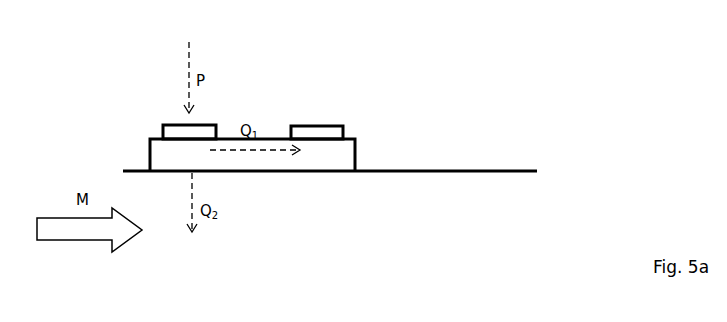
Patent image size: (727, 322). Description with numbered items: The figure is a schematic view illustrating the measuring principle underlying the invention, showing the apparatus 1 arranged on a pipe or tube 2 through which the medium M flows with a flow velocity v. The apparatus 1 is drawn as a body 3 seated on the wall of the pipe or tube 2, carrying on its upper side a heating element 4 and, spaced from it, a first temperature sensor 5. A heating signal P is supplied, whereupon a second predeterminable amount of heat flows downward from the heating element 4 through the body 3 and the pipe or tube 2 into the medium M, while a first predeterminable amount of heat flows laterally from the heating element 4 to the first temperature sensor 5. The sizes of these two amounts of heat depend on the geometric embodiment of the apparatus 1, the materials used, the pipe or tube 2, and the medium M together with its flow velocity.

The apparatus 1 is at (110, 58).
The pipe or tube 2 is at (433, 171).
The body 3 is at (356, 160).
The heating element 4 is at (162, 127).
The first temperature sensor 5 is at (350, 131).